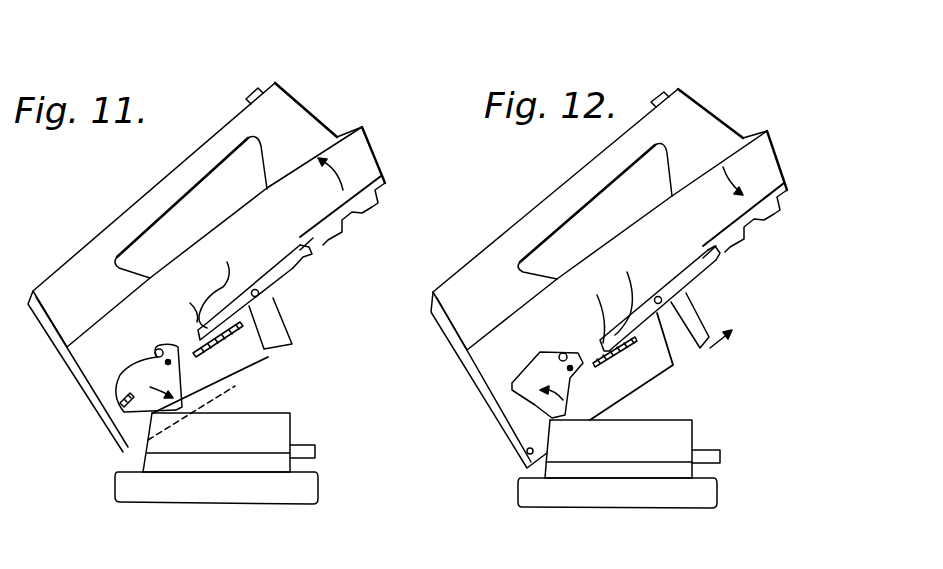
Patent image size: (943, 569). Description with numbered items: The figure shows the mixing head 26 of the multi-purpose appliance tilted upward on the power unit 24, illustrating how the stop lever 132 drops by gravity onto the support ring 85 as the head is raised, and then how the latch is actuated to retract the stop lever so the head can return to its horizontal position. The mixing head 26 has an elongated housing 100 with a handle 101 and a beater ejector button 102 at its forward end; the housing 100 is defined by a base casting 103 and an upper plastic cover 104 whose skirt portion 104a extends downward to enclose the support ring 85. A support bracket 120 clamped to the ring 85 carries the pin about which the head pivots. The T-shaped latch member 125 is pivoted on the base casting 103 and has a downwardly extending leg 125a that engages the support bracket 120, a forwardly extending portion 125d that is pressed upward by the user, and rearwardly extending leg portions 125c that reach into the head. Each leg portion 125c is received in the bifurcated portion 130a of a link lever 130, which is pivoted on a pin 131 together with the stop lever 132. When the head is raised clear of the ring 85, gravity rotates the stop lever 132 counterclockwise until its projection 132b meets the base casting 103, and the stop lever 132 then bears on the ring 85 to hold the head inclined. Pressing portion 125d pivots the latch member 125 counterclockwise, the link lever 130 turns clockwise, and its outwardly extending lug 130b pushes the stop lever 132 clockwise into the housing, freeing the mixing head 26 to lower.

In FIG. 11, the power unit 24 is at (110, 493).
In FIG. 12, the power unit 24 is at (502, 500).
In FIG. 11, the mixing head 26 is at (200, 148).
In FIG. 12, the mixing head 26 is at (692, 93).
In FIG. 11, the support ring 85 is at (277, 432).
In FIG. 12, the support ring 85 is at (683, 431).
In FIG. 11, the housing 100 is at (352, 140).
In FIG. 12, the housing 100 is at (789, 116).
In FIG. 11, the handle 101 is at (133, 202).
In FIG. 12, the handle 101 is at (567, 187).
In FIG. 11, the beater ejector button 102 is at (258, 84).
In FIG. 12, the beater ejector button 102 is at (657, 95).
In FIG. 11, the base casting 103 is at (372, 206).
In FIG. 12, the base casting 103 is at (777, 203).
In FIG. 11, the upper plastic cover 104 is at (366, 159).
In FIG. 12, the upper plastic cover 104 is at (764, 166).
In FIG. 11, the skirt portion 104a is at (270, 357).
In FIG. 12, the skirt portion 104a is at (670, 367).
In FIG. 11, the support bracket 120 is at (317, 451).
In FIG. 12, the support bracket 120 is at (722, 456).
In FIG. 11, the latch member 125 is at (292, 275).
In FIG. 12, the latch member 125 is at (700, 250).
In FIG. 11, the leg 125a is at (290, 322).
In FIG. 12, the leg 125a is at (702, 327).
In FIG. 11, the leg portion 125c is at (222, 281).
In FIG. 12, the leg portion 125c is at (622, 290).
In FIG. 11, the forwardly extending portion 125d is at (308, 252).
In FIG. 12, the forwardly extending portion 125d is at (704, 263).
In FIG. 11, the link lever 130 is at (173, 337).
In FIG. 12, the link lever 130 is at (587, 350).
In FIG. 11, the bifurcated portion 130a is at (190, 303).
In FIG. 12, the bifurcated portion 130a is at (585, 306).
In FIG. 11, the outwardly extending lug 130b is at (155, 352).
In FIG. 12, the outwardly extending lug 130b is at (559, 353).
In FIG. 11, the pin 131 is at (182, 357).
In FIG. 12, the pin 131 is at (577, 373).
In FIG. 11, the stop lever 132 is at (203, 393).
In FIG. 12, the stop lever 132 is at (567, 427).
In FIG. 11, the projection 132b is at (120, 393).
In FIG. 12, the projection 132b is at (515, 383).